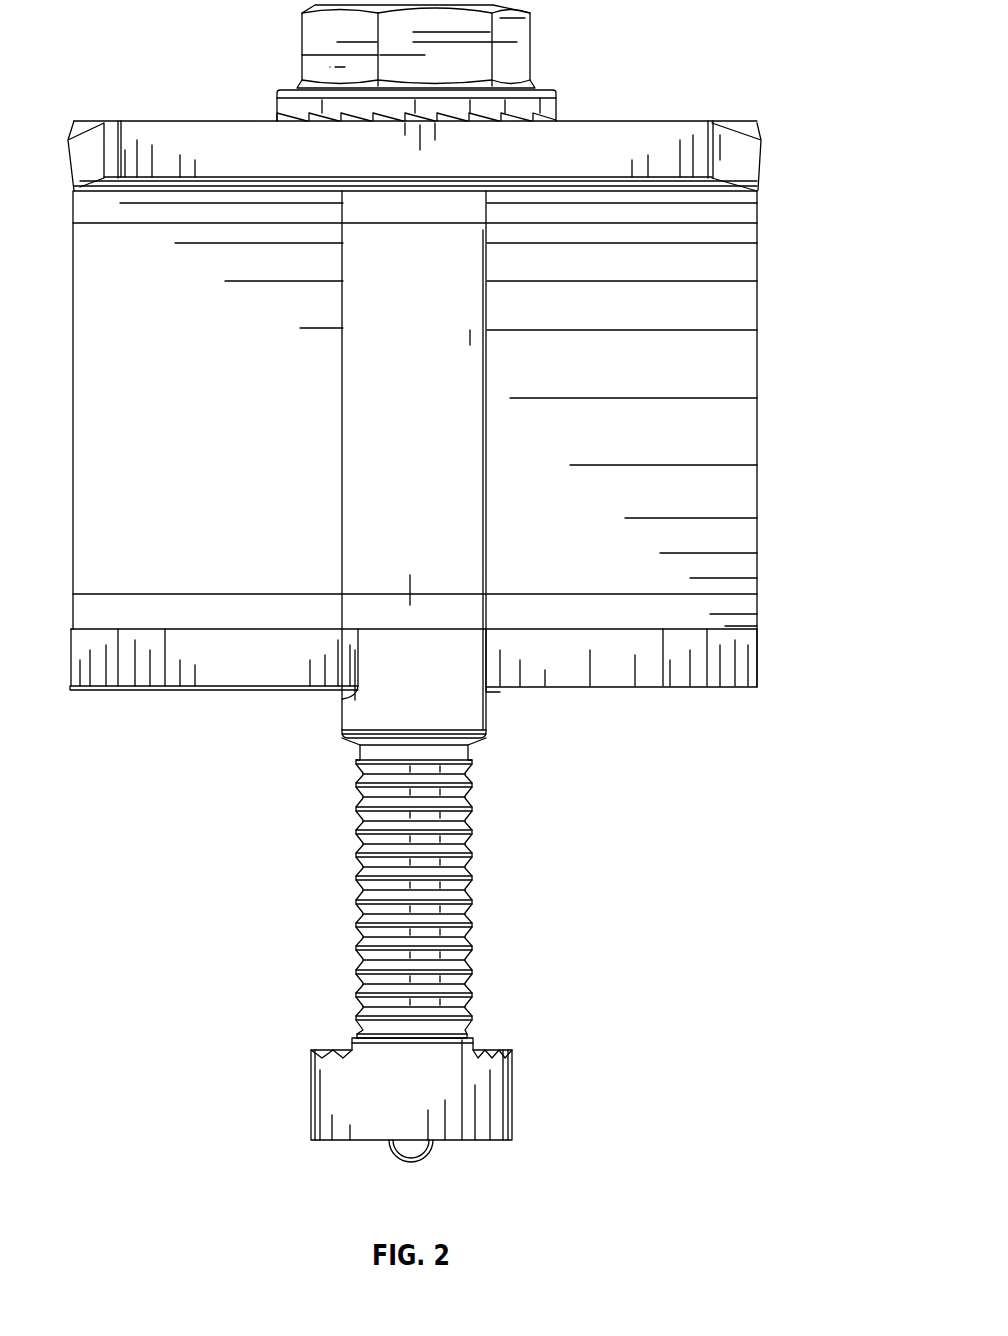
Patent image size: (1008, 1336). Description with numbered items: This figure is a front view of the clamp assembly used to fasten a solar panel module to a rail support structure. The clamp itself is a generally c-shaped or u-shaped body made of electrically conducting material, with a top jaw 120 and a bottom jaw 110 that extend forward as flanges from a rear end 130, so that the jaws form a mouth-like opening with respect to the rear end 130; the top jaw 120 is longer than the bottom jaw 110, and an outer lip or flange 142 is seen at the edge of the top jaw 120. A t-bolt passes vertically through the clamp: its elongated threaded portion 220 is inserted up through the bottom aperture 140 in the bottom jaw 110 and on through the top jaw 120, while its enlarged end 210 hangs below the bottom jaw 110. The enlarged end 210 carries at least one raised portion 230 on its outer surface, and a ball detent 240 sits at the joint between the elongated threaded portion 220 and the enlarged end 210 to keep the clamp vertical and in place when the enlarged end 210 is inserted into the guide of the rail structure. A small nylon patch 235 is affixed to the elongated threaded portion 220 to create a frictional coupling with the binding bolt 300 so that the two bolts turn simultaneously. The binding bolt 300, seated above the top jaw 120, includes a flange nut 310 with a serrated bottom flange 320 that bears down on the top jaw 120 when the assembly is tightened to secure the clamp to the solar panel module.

The flange nut 310 is at (532, 48).
The serrated bottom flange 320 is at (556, 120).
The top jaw 120 is at (683, 122).
The flange 142 is at (763, 168).
The rear end 130 is at (757, 372).
The binding bolt 300 is at (487, 537).
The bottom jaw 110 is at (757, 658).
The bottom aperture 140 is at (345, 704).
The elongated threaded portion 220 is at (470, 965).
The nylon patch 235 is at (468, 845).
The enlarged end 210 is at (512, 1098).
The raised portion 230 is at (500, 1048).
The ball detent 240 is at (400, 1148).